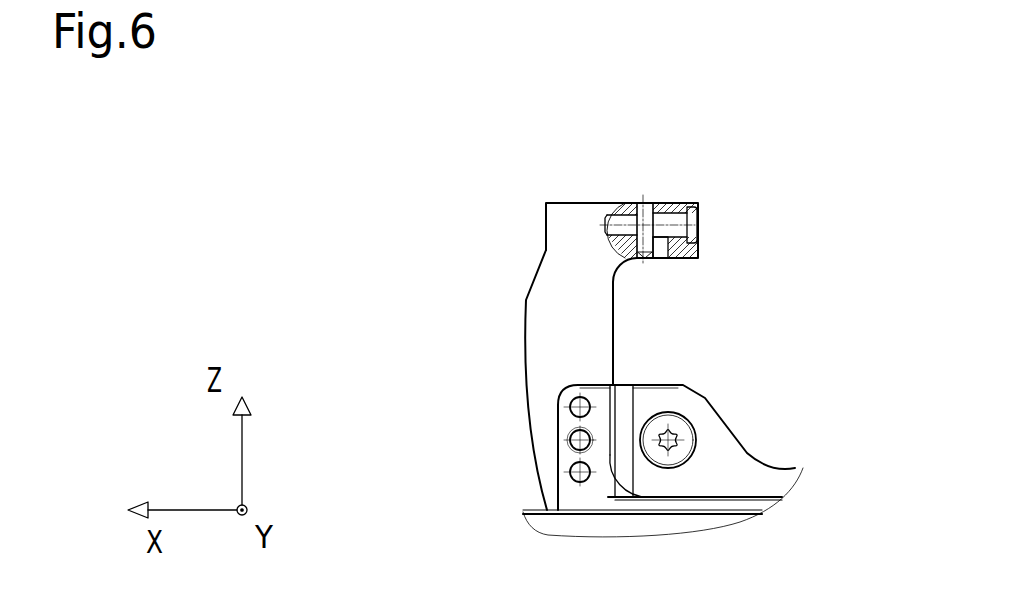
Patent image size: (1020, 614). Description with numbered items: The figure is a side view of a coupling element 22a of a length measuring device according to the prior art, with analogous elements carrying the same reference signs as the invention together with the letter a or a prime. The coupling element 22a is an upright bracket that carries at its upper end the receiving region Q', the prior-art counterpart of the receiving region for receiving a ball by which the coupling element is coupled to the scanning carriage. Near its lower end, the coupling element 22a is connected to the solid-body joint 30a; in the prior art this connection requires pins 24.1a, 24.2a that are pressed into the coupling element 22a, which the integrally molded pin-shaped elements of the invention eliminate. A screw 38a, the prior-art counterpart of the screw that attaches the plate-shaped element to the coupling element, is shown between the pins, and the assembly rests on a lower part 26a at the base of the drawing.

The coupling element 22a is at (568, 274).
The pin 24.1a is at (577, 477).
The pin 24.2a is at (575, 409).
The base / mounting part 26a is at (723, 470).
The solid-body joint 30a is at (623, 402).
The screw 38a is at (575, 440).
The receiving region Q' is at (676, 176).